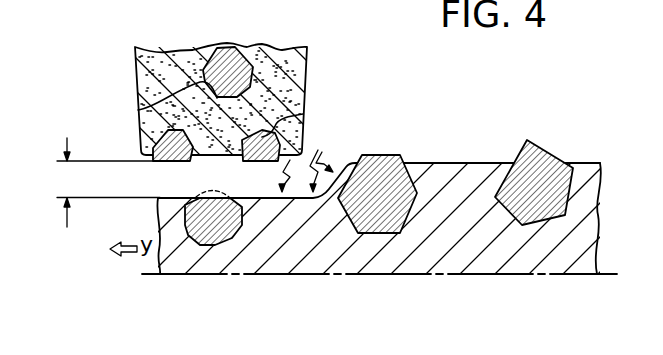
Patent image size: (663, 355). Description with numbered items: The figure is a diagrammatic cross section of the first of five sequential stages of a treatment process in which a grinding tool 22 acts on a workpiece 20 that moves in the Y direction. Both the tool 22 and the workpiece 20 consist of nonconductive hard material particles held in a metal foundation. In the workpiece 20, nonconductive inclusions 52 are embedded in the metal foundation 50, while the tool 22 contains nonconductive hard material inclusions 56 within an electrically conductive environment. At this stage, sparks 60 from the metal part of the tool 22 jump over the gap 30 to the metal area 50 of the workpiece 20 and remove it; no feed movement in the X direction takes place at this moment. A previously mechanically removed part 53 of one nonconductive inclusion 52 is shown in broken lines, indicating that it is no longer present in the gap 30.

The workpiece 20 is at (463, 158).
The tool 22 is at (314, 68).
The gap 30 is at (108, 182).
The metal foundation 50 is at (446, 240).
The nonconductive inclusions 52 is at (382, 158).
The previously mechanically removed part 53 is at (210, 196).
The nonconductive hard material inclusions 56 is at (153, 146).
The sparks 60 is at (318, 150).